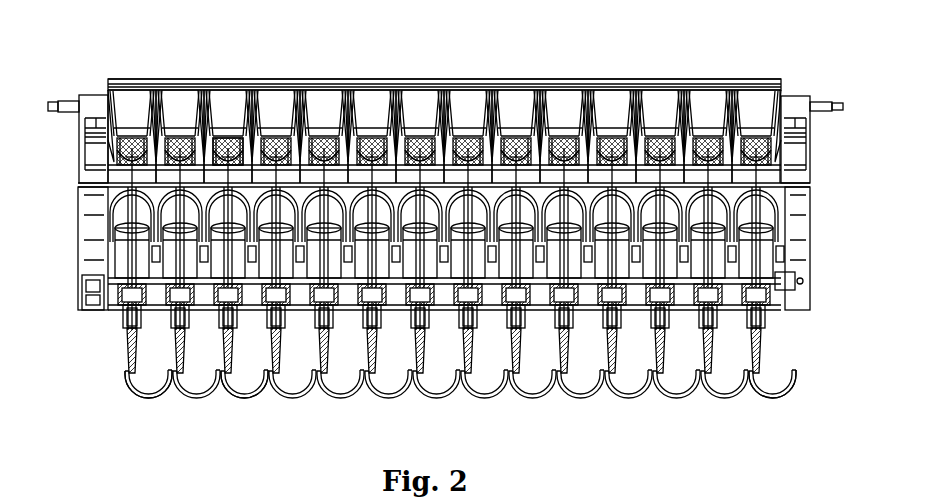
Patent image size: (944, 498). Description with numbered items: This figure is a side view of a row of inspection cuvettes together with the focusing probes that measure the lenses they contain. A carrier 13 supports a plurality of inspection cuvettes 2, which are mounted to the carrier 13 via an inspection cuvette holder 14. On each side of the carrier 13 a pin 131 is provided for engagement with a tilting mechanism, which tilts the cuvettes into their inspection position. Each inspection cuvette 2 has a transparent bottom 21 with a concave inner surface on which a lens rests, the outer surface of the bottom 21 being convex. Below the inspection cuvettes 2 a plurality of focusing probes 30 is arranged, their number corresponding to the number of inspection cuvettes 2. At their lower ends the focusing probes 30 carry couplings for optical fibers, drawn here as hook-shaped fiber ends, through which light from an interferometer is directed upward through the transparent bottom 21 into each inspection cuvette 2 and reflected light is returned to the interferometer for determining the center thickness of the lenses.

The inspection cuvette 2 is at (473, 84).
The bottom 21 is at (239, 140).
The carrier 13 is at (795, 226).
The inspection cuvette holder 14 is at (795, 172).
The pin 131 is at (65, 100).
The focusing probe 30 is at (105, 310).